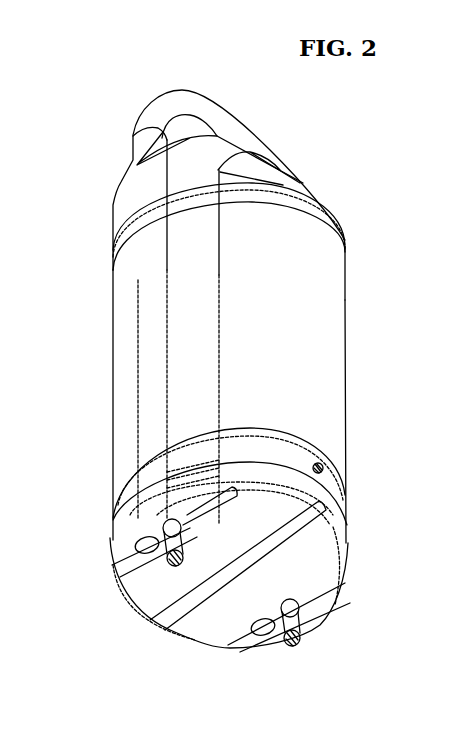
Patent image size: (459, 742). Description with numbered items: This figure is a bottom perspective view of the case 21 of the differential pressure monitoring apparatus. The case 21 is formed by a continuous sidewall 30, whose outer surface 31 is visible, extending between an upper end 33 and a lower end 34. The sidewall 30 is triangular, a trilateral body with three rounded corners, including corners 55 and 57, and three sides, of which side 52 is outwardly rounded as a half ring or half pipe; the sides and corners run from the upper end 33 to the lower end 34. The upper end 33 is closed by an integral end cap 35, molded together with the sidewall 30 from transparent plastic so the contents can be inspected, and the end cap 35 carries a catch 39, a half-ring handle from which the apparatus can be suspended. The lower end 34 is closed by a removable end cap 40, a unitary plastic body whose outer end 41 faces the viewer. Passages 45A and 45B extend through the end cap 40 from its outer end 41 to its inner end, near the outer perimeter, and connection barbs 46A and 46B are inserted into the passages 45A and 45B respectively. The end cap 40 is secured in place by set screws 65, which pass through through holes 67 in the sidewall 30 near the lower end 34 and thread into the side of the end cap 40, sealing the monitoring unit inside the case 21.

The case 21 is at (112, 316).
The continuous sidewall 30 is at (347, 405).
The outer surface 31 is at (323, 347).
The upper end 33 is at (350, 252).
The lower end 34 is at (338, 491).
The end cap 35 is at (127, 203).
The catch 39 is at (188, 102).
The end cap 40 is at (340, 512).
The outer end 41 is at (202, 623).
The passage 45A is at (163, 522).
The passage 45B is at (303, 612).
The connection barb 46A is at (122, 580).
The connection barb 46B is at (310, 633).
The side 52 is at (112, 388).
The corner 55 is at (140, 269).
The corner 57 is at (325, 385).
The set screw 65 is at (333, 472).
The through hole 67 is at (325, 465).